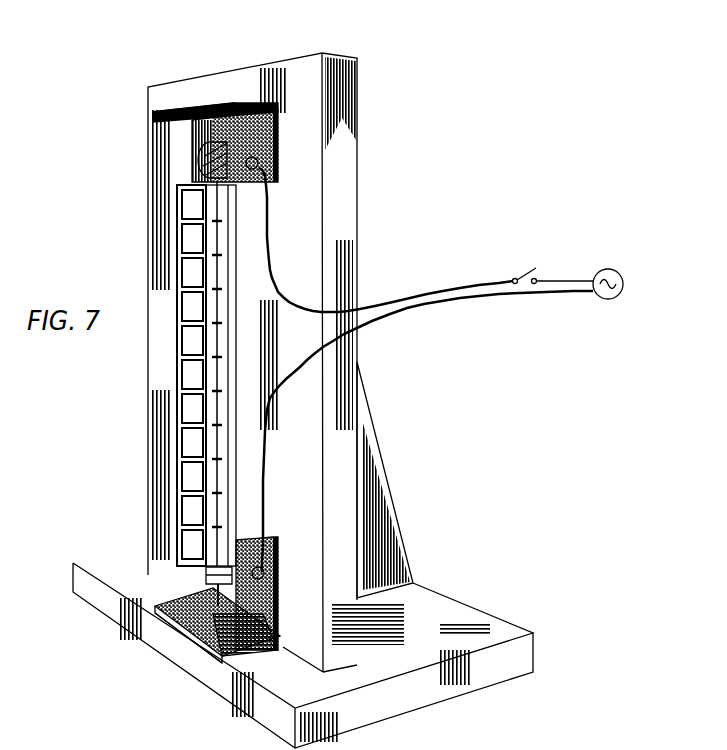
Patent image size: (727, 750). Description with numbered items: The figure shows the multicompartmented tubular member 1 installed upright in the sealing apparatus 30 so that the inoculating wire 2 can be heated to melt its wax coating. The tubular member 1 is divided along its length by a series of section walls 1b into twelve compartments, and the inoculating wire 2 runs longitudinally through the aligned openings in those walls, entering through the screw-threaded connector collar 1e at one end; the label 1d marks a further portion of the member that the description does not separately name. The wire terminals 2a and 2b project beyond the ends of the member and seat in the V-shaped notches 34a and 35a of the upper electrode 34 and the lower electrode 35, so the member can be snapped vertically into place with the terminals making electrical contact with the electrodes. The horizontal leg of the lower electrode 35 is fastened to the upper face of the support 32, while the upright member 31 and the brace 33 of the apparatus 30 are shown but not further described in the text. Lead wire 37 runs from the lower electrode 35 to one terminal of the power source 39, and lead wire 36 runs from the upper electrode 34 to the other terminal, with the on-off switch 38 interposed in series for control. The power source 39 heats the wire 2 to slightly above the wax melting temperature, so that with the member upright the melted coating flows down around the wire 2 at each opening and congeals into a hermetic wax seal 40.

The tubular member 1 is at (177, 368).
The section walls 1b is at (191, 296).
The cell element 1d is at (187, 400).
The screw-threaded connector collar 1e is at (204, 576).
The inoculating wire 2 is at (214, 374).
The terminal of inoculating wire 2a is at (204, 141).
The terminal of inoculating wire 2b is at (240, 651).
The test apparatus 30 is at (121, 446).
The upright panel 31 is at (347, 176).
The support 32 is at (475, 673).
The brace 33 is at (373, 467).
The upper electrode 34 is at (156, 116).
The V-shaped notch 34a is at (190, 108).
The lower electrode 35 is at (163, 620).
The V-shaped notch 35a is at (192, 632).
The lead wire 36 is at (433, 290).
The lead wire 37 is at (413, 308).
The on-off switch 38 is at (553, 266).
The power source 39 is at (608, 273).
The wax seal 40 is at (213, 254).